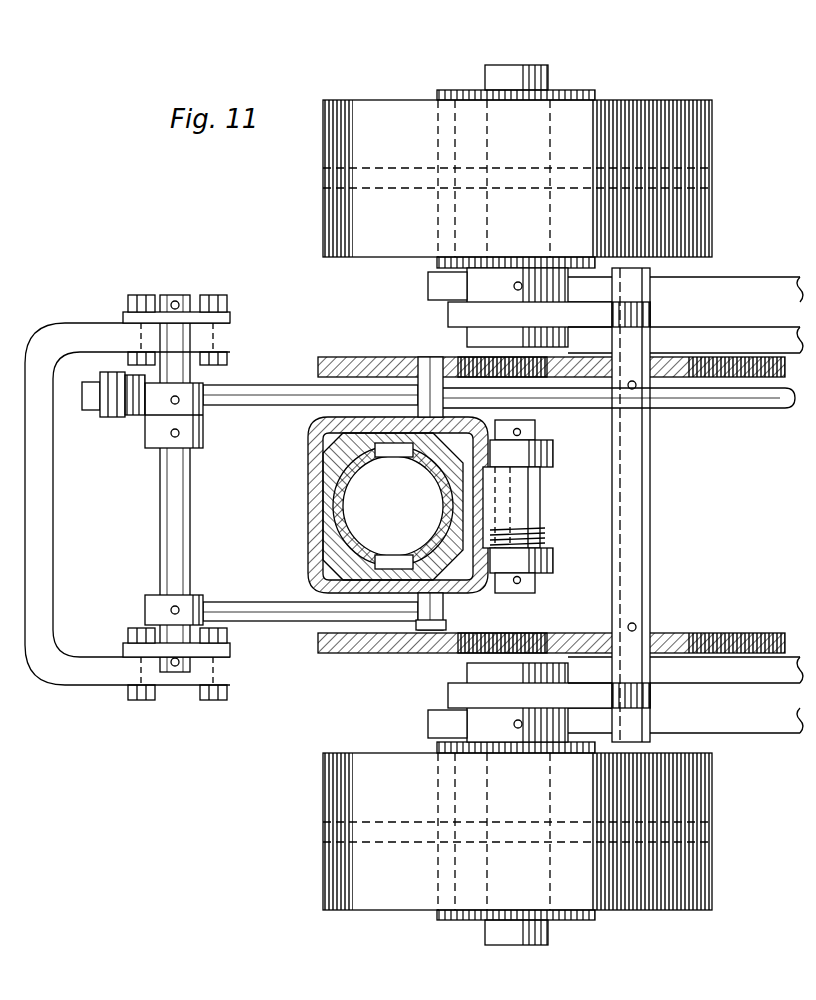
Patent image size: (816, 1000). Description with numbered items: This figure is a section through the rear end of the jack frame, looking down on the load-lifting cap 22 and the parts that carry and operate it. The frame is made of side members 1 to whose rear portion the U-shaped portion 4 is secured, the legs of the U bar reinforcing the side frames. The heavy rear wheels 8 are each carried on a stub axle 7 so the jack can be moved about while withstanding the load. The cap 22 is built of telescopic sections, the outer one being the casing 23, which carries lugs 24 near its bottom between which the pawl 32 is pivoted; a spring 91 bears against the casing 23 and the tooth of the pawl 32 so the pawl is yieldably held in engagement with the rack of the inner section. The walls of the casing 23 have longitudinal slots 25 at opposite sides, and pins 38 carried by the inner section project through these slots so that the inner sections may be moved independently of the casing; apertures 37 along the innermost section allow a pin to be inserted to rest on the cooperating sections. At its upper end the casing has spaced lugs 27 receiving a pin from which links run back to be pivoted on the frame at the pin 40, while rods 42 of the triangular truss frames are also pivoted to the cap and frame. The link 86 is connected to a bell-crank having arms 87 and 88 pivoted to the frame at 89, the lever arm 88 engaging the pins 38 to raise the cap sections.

The side member 1 is at (750, 286).
The U-shaped portion 4 is at (38, 600).
The stub axle 7 is at (555, 66).
The rear wheel 8 is at (712, 100).
The load-lifting cap 22 is at (318, 526).
The casing 23 is at (313, 565).
The lug 24 is at (555, 456).
The longitudinal slot 25 is at (454, 346).
The spaced lugs 27 is at (342, 360).
The pawl 32 is at (470, 501).
The aperture 37 is at (330, 466).
The pin 38 is at (420, 632).
The pin 40 is at (636, 521).
The rod 42 is at (668, 358).
The link 86 is at (771, 408).
The bell-crank arm 87 is at (140, 394).
The lever arm 88 is at (266, 406).
The pivot 89 is at (186, 551).
The spring 91 is at (545, 540).